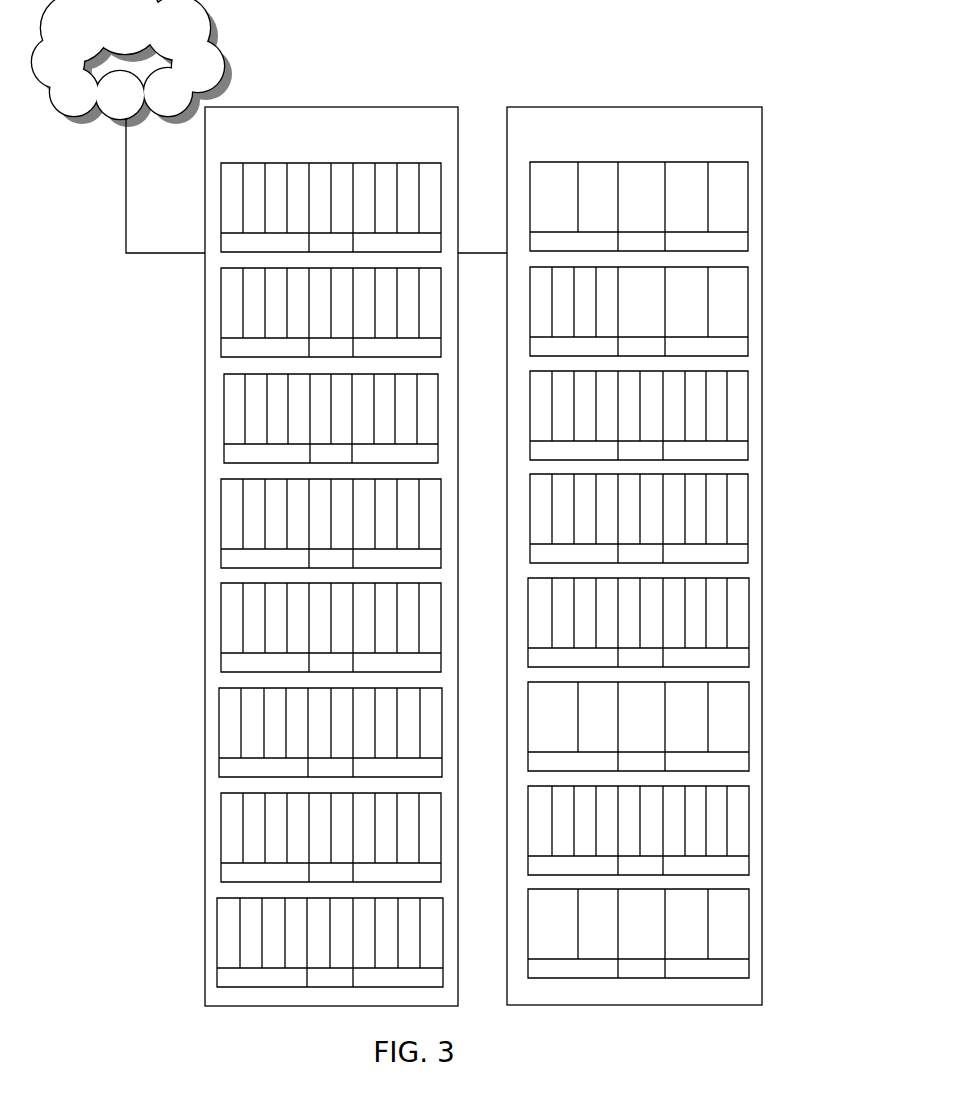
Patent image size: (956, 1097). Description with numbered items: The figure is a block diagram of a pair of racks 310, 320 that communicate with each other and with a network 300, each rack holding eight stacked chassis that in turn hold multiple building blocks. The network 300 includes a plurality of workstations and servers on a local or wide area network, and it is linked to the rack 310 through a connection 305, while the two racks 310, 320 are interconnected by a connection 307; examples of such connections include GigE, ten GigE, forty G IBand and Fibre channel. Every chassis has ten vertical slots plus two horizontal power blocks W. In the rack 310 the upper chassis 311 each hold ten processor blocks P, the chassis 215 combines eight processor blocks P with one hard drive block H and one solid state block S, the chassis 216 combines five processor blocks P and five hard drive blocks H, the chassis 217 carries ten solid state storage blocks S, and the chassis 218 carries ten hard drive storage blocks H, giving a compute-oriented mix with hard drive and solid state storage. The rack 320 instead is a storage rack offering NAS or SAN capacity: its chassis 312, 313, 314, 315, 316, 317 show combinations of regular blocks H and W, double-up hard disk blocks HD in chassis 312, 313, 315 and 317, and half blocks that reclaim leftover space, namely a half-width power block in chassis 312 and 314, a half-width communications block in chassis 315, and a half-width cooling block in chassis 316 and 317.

The network 300 is at (240, 42).
The connection 305 is at (126, 190).
The connection 307 is at (477, 250).
The rack 310 is at (343, 107).
The chassis 311 is at (222, 516).
The chassis 215 is at (221, 612).
The chassis 216 is at (219, 728).
The chassis 217 is at (221, 836).
The chassis 218 is at (217, 941).
The rack 320 is at (565, 107).
The chassis 312 is at (655, 160).
The chassis 313 is at (742, 303).
The chassis 314 is at (748, 401).
The chassis 315 is at (748, 713).
The chassis 316 is at (750, 810).
The chassis 317 is at (748, 930).